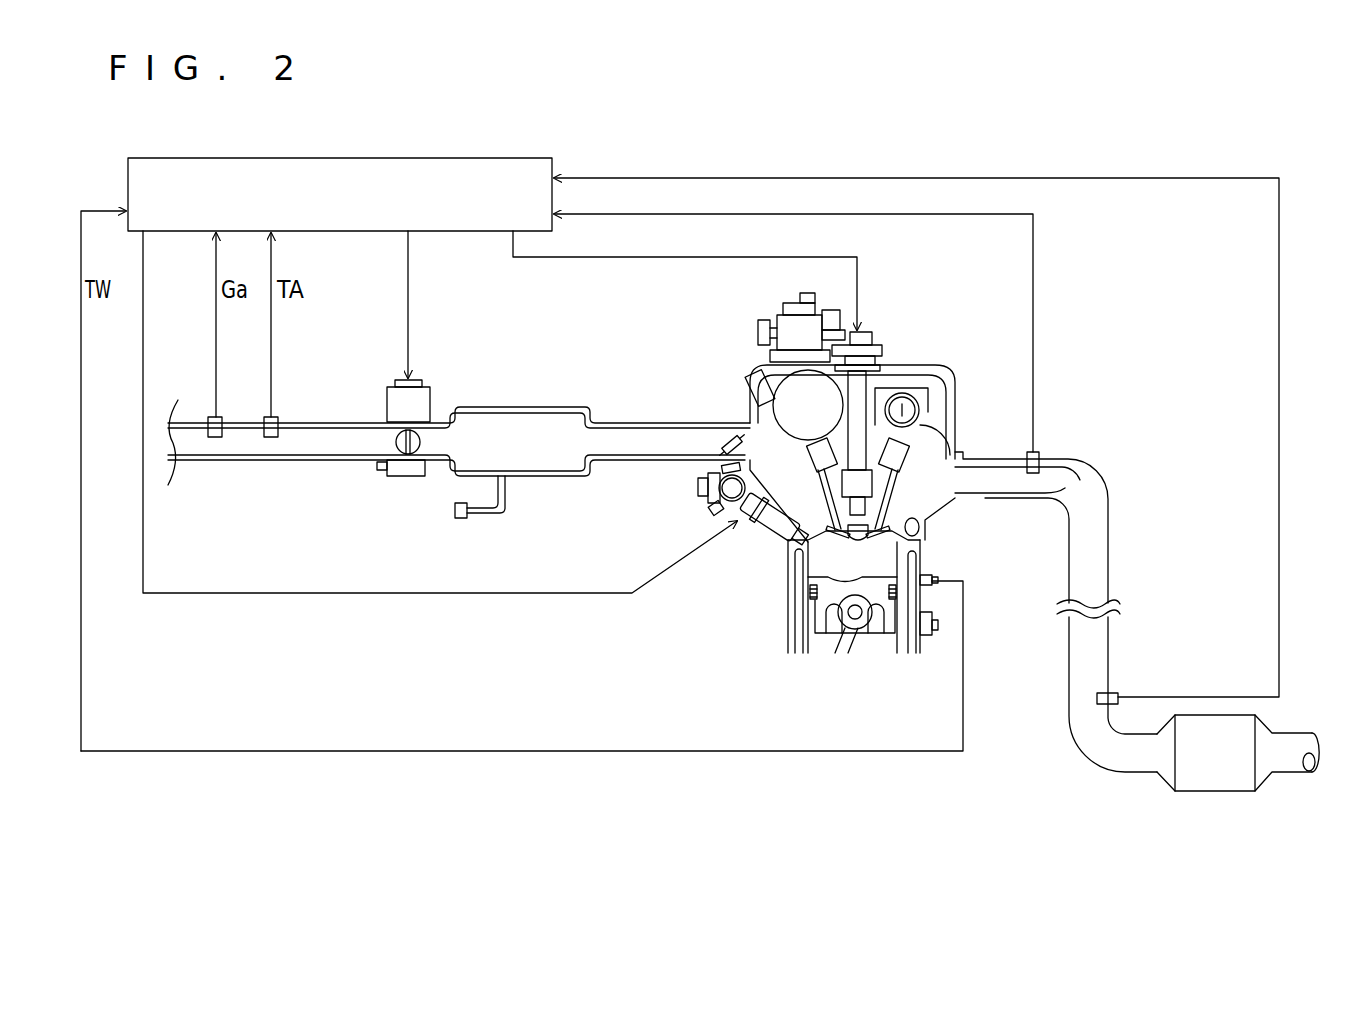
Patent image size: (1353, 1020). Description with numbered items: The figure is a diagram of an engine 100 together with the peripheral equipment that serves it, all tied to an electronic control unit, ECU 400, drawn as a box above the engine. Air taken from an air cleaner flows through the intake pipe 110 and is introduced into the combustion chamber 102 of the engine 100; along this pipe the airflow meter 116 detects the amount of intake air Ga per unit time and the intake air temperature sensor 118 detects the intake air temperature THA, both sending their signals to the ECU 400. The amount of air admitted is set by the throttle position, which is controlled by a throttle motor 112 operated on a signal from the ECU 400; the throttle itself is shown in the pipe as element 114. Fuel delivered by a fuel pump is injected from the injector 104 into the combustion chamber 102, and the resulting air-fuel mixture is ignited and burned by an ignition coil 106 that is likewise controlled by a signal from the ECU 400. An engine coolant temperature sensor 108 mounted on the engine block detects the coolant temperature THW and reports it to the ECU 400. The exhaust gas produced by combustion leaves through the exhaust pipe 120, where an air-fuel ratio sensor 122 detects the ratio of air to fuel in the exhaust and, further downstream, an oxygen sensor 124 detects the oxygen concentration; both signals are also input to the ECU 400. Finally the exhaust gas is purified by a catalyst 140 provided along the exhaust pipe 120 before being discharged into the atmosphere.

The ECU 400 is at (337, 158).
The engine 100 is at (846, 485).
The combustion chamber 102 is at (878, 555).
The injector 104 is at (778, 517).
The ignition coil 106 is at (875, 338).
The engine coolant temperature sensor 108 is at (930, 578).
The intake pipe 110 is at (553, 477).
The throttle motor 112 is at (432, 398).
The throttle valve 114 is at (395, 440).
The airflow meter 116 is at (212, 416).
The intake air temperature sensor 118 is at (268, 416).
The exhaust pipe 120 is at (1087, 458).
The air-fuel ratio sensor 122 is at (1027, 452).
The oxygen sensor 124 is at (1113, 692).
The catalyst 140 is at (1222, 791).